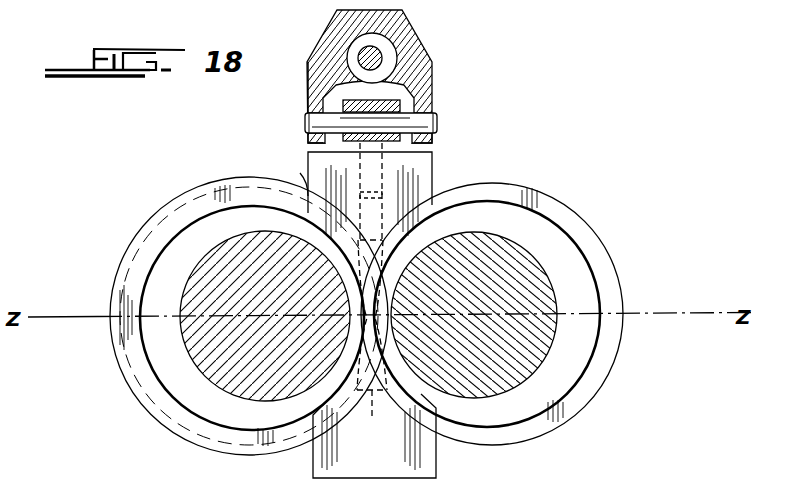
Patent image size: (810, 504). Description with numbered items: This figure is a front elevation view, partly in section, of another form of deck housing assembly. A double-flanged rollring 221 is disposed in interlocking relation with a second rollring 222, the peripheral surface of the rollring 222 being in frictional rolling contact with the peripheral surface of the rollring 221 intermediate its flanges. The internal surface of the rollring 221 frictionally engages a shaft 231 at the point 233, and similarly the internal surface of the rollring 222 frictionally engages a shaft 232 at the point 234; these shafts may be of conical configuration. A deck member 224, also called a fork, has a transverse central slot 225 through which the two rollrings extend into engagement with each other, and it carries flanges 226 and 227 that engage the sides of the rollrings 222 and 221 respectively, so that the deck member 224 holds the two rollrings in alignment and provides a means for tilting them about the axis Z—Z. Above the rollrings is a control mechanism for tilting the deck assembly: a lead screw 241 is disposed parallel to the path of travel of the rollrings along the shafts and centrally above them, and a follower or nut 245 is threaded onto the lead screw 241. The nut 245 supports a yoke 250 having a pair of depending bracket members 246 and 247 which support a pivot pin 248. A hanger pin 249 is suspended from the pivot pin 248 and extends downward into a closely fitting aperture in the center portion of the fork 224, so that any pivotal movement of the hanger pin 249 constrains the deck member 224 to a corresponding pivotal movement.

The double-flanged rollring 221 is at (200, 197).
The second rollring 222 is at (613, 272).
The deck member 224 is at (437, 166).
The transverse central slot 225 is at (383, 393).
The flange 226 is at (417, 213).
The flange 227 is at (286, 176).
The shaft 231 is at (190, 294).
The shaft 232 is at (533, 278).
The point 233 is at (353, 313).
The point 234 is at (399, 314).
The lead screw 241 is at (383, 61).
The follower or nut 245 is at (380, 48).
The depending bracket member 246 is at (420, 102).
The depending bracket member 247 is at (312, 103).
The pivot pin 248 is at (436, 124).
The hanger pin 249 is at (362, 146).
The yoke 250 is at (424, 68).